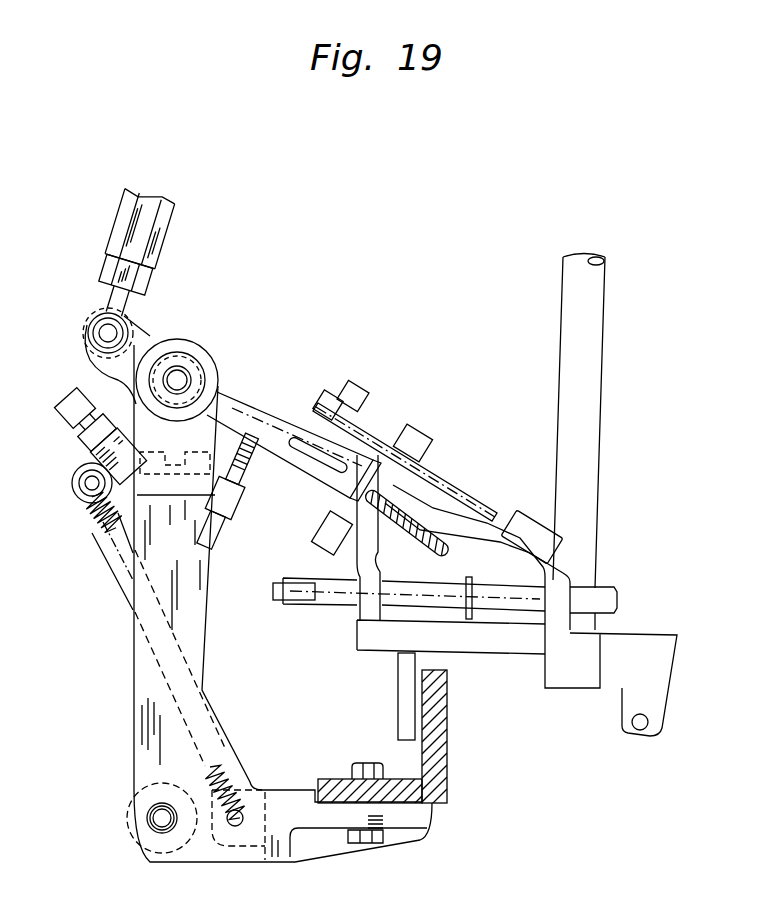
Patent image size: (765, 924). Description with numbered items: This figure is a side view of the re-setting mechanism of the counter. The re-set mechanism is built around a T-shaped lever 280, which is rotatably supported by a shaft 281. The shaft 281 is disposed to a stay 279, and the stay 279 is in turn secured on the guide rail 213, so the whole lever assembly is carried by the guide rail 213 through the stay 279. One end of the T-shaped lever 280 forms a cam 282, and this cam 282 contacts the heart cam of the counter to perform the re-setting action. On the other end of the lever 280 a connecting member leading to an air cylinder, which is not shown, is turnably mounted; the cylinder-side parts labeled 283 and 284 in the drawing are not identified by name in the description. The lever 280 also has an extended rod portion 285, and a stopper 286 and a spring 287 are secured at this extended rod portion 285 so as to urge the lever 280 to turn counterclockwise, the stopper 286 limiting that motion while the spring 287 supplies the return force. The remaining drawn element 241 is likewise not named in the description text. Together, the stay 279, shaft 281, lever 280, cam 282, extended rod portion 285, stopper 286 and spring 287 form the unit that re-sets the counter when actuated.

The guide rail 213 is at (443, 736).
The bent bar 241 is at (452, 540).
The stay 279 is at (212, 718).
The T-shaped lever 280 is at (147, 334).
The shaft 281 is at (183, 380).
The cam 282 is at (243, 408).
The cylinder rod 283 is at (163, 234).
The pivot pin 284 is at (98, 320).
The extended rod portion 285 is at (85, 452).
The stopper 286 is at (70, 400).
The spring 287 is at (103, 533).